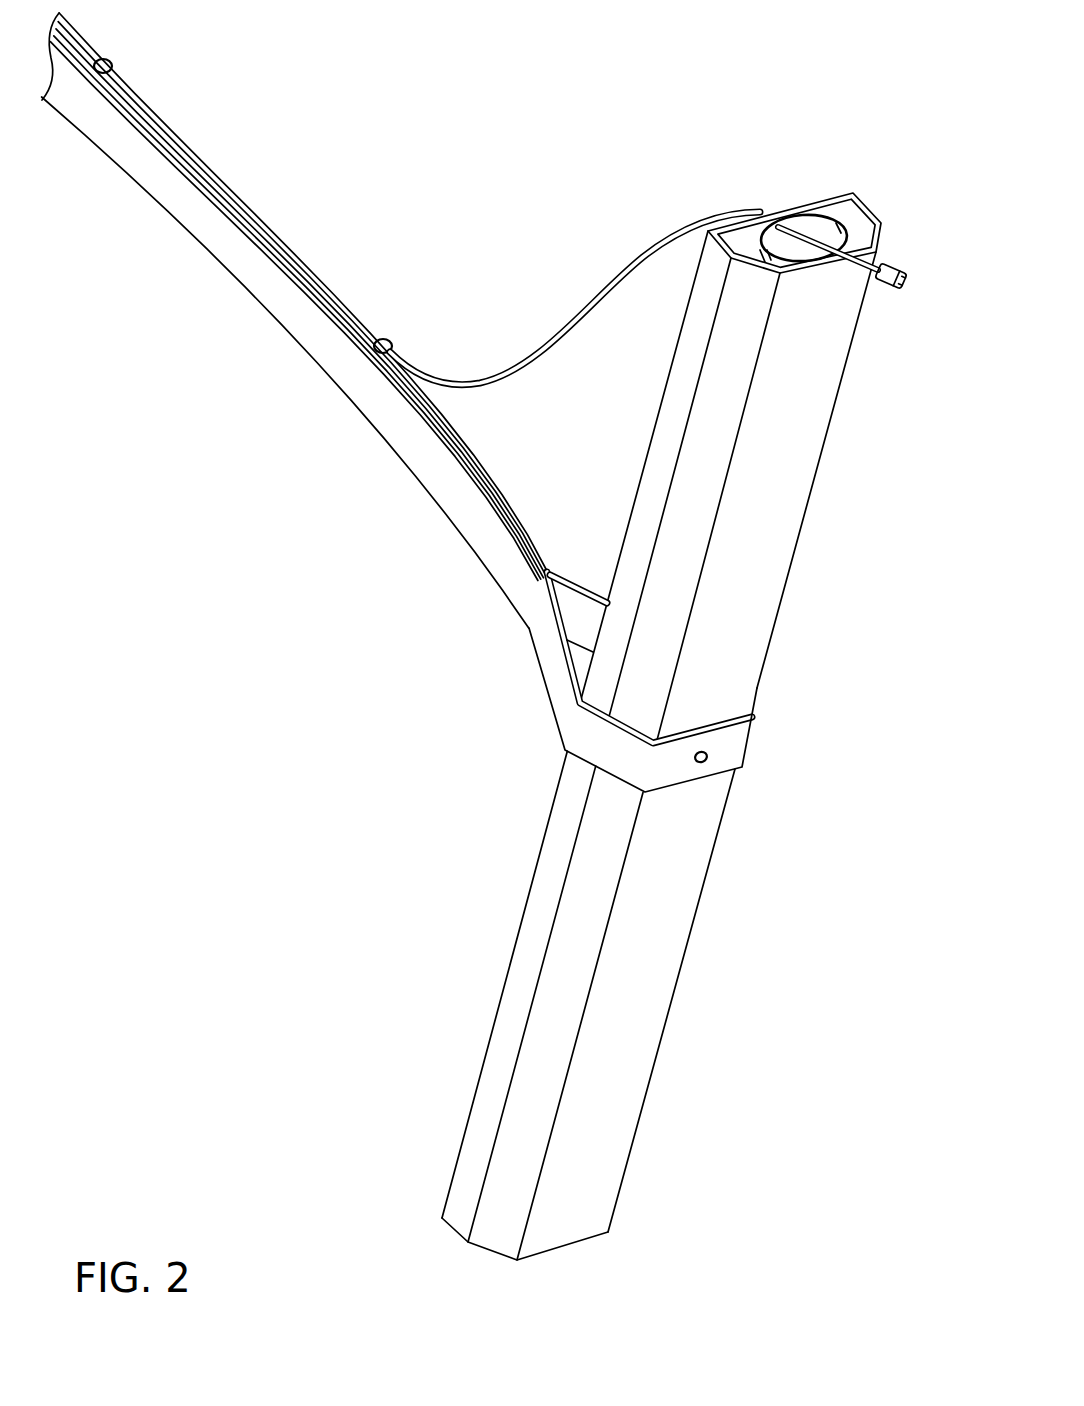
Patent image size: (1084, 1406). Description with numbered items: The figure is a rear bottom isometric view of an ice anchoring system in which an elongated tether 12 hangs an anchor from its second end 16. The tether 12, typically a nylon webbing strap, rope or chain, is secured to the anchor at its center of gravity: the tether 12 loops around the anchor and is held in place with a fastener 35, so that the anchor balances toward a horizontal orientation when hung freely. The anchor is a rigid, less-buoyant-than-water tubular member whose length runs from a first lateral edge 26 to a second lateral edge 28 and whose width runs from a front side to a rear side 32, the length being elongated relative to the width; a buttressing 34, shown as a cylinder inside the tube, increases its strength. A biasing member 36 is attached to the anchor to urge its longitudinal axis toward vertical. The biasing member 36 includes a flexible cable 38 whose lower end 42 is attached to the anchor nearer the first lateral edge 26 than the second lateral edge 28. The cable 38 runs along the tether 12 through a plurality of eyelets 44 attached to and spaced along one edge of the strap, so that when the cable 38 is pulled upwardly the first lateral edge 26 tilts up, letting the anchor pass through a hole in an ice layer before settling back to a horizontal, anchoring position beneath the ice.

The tether 12 is at (437, 512).
The second end 16 is at (735, 745).
The first lateral edge 26 is at (863, 205).
The second lateral edge 28 is at (485, 1250).
The rear side 32 is at (540, 916).
The buttressing 34 is at (818, 223).
The fastener 35 is at (703, 764).
The biasing member 36 is at (563, 326).
The cable 38 is at (640, 258).
The lower end 42 is at (905, 286).
The eyelets 44 is at (105, 62).